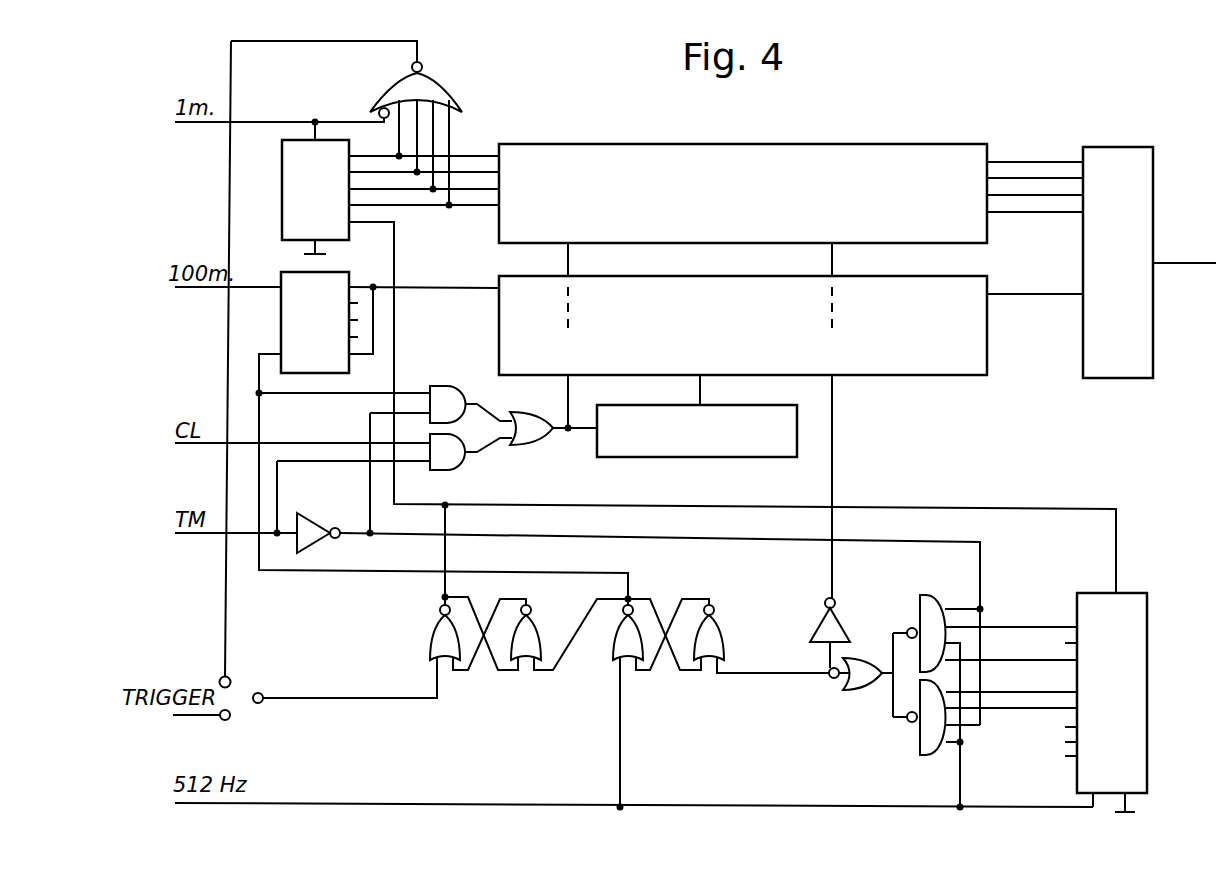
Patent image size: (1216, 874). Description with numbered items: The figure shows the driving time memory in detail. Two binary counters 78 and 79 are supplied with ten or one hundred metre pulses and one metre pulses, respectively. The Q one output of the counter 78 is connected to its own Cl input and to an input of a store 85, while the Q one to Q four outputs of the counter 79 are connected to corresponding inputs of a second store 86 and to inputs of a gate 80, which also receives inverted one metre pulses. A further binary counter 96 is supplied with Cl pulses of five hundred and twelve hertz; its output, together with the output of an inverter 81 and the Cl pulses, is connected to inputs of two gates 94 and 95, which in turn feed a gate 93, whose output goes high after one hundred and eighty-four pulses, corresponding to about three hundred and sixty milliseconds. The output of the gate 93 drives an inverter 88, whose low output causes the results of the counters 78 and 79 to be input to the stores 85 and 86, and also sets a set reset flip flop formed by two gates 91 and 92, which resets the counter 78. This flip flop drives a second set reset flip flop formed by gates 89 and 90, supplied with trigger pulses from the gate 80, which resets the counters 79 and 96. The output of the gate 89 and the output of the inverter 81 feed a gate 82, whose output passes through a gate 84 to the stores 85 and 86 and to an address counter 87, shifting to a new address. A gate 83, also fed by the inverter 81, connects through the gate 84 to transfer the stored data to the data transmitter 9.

The data transmitter 9 is at (1083, 354).
The binary counter 78 is at (281, 324).
The binary counter 79 is at (284, 190).
The gate 80 is at (452, 72).
The inverter 81 is at (320, 516).
The gate 82 is at (450, 386).
The gate 83 is at (445, 471).
The gate 84 is at (520, 445).
The store 85 is at (743, 325).
The second store 86 is at (743, 193).
The address counter 87 is at (683, 460).
The inverter 88 is at (821, 616).
The gate 89 is at (430, 625).
The gate 90 is at (540, 625).
The gate 91 is at (612, 656).
The gate 92 is at (724, 636).
The gate 93 is at (848, 690).
The gate 94 is at (916, 613).
The gate 95 is at (920, 750).
The binary counter 96 is at (1147, 685).